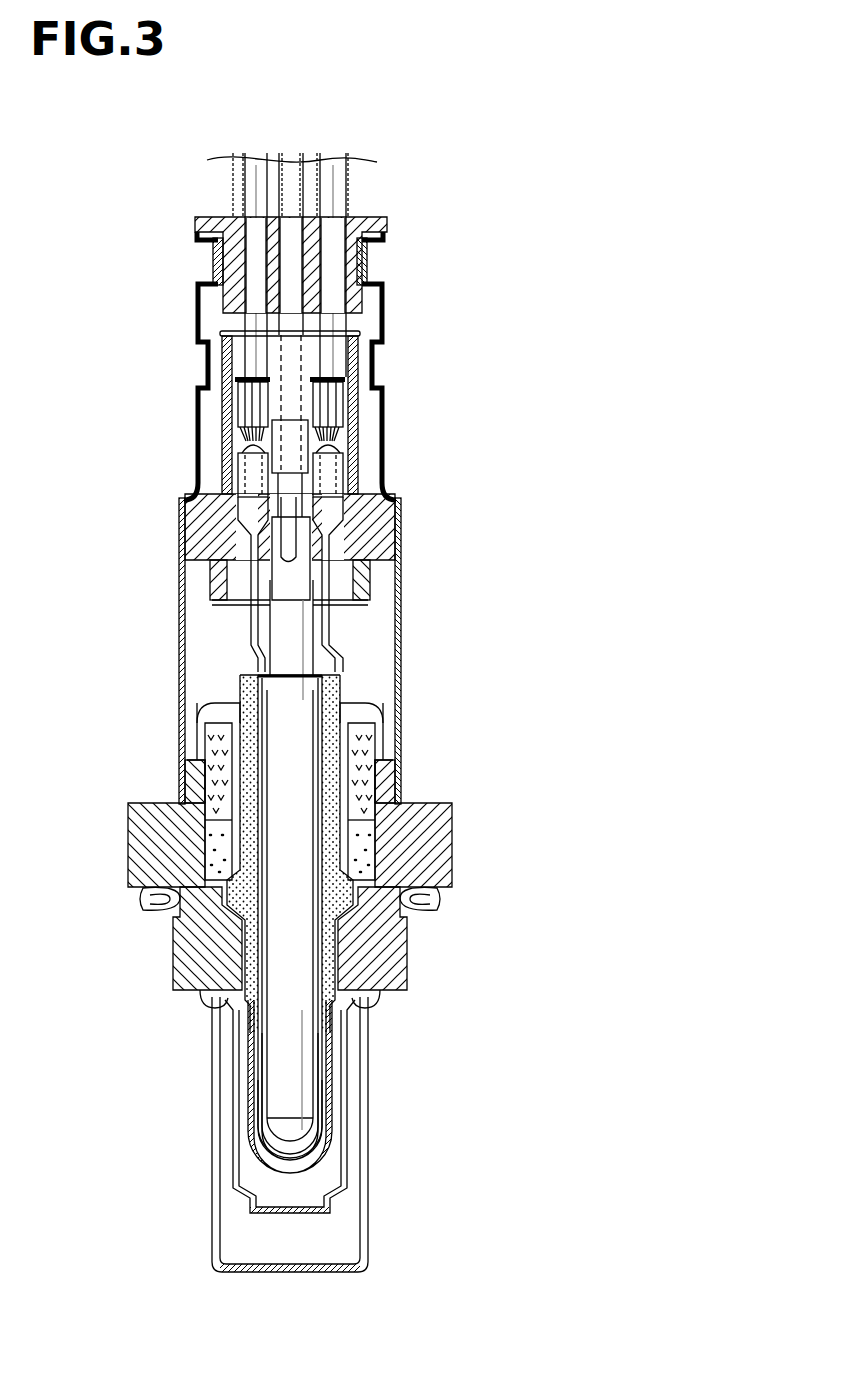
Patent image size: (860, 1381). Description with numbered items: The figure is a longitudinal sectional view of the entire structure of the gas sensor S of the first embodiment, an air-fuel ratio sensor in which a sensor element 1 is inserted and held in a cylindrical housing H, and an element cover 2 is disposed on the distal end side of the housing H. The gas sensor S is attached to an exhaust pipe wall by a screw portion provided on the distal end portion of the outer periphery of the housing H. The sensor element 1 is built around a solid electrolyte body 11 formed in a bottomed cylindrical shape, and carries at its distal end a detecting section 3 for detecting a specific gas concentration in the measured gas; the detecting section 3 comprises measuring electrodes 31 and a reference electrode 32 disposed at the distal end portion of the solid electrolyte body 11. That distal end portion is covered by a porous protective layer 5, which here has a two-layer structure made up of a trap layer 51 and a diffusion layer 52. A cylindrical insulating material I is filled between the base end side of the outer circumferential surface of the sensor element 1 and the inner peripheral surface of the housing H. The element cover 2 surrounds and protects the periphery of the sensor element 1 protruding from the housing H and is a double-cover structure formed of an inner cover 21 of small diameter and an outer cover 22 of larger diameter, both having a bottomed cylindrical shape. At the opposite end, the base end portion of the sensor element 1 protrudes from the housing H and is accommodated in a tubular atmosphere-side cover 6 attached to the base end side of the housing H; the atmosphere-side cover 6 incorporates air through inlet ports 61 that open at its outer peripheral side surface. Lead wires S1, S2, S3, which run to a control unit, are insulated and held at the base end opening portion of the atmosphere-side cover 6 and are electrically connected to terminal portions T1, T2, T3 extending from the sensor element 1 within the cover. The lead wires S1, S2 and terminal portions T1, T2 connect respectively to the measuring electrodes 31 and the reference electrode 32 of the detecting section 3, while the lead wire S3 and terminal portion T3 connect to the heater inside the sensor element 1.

The lead wire S2 is at (253, 165).
The lead wire S3 is at (288, 168).
The lead wire S1 is at (330, 175).
The inlet port 61 is at (385, 312).
The atmosphere-side cover 6 is at (400, 497).
The gas sensor S is at (470, 398).
The terminal portion T1 is at (328, 625).
The terminal portion T2 is at (250, 625).
The terminal portion T3 is at (278, 560).
The insulating material I is at (365, 870).
The housing H is at (425, 838).
The porous protective layer 5 is at (364, 924).
The diffusion layer 52 is at (330, 1047).
The trap layer 51 is at (318, 1093).
The detecting section 3 is at (193, 918).
The measuring electrode 31 is at (258, 1110).
The solid electrolyte body 11 is at (270, 1093).
The reference electrode 32 is at (290, 1100).
The element cover 2 is at (357, 1134).
The inner cover 21 is at (340, 1147).
The outer cover 22 is at (365, 1187).
The sensor element 1 is at (278, 1183).